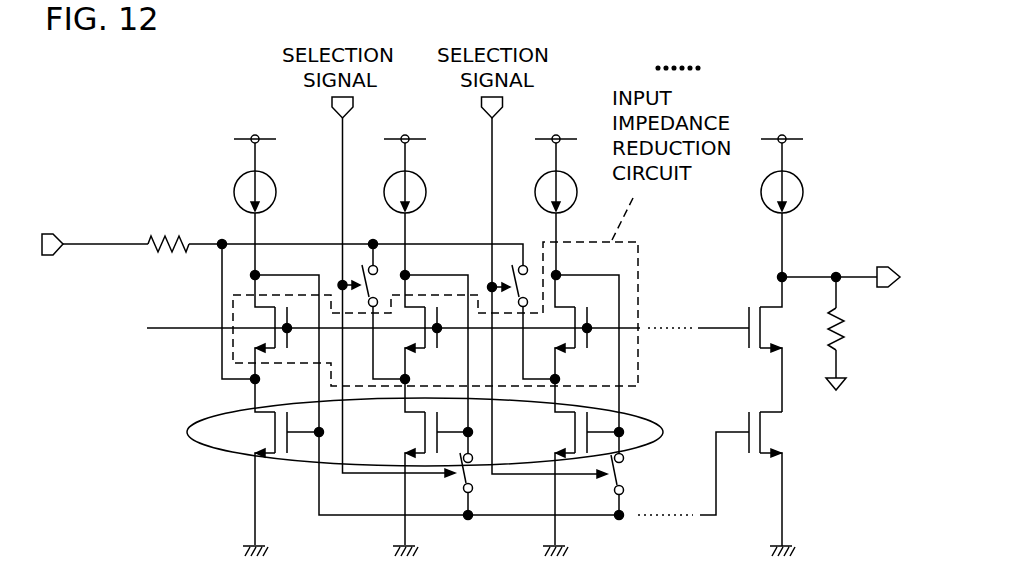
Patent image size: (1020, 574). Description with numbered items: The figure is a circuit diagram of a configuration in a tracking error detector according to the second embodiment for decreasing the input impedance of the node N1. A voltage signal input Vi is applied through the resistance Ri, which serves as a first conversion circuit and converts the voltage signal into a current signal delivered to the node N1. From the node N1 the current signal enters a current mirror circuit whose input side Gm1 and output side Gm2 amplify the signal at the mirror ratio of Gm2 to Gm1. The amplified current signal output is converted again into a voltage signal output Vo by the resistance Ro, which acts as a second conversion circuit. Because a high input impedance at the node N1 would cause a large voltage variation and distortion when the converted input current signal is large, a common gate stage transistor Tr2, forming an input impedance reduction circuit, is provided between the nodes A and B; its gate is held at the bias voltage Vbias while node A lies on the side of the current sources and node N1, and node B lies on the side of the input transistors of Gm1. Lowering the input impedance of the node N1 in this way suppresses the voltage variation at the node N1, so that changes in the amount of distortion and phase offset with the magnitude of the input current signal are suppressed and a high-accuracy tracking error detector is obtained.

The voltage signal input Vi is at (52, 230).
The resistance (first conversion circuit) Ri is at (168, 230).
The node N1 is at (221, 227).
The node A is at (263, 263).
The node B is at (265, 389).
The bias voltage Vbias is at (448, 319).
The common gate stage transistor (input impedance reduction circuit) Tr2 is at (432, 327).
The current mirror input transconductance Gm1 is at (420, 462).
The current mirror output transconductance Gm2 is at (792, 411).
The voltage signal output Vo is at (884, 261).
The resistance (second conversion circuit) Ro is at (849, 333).